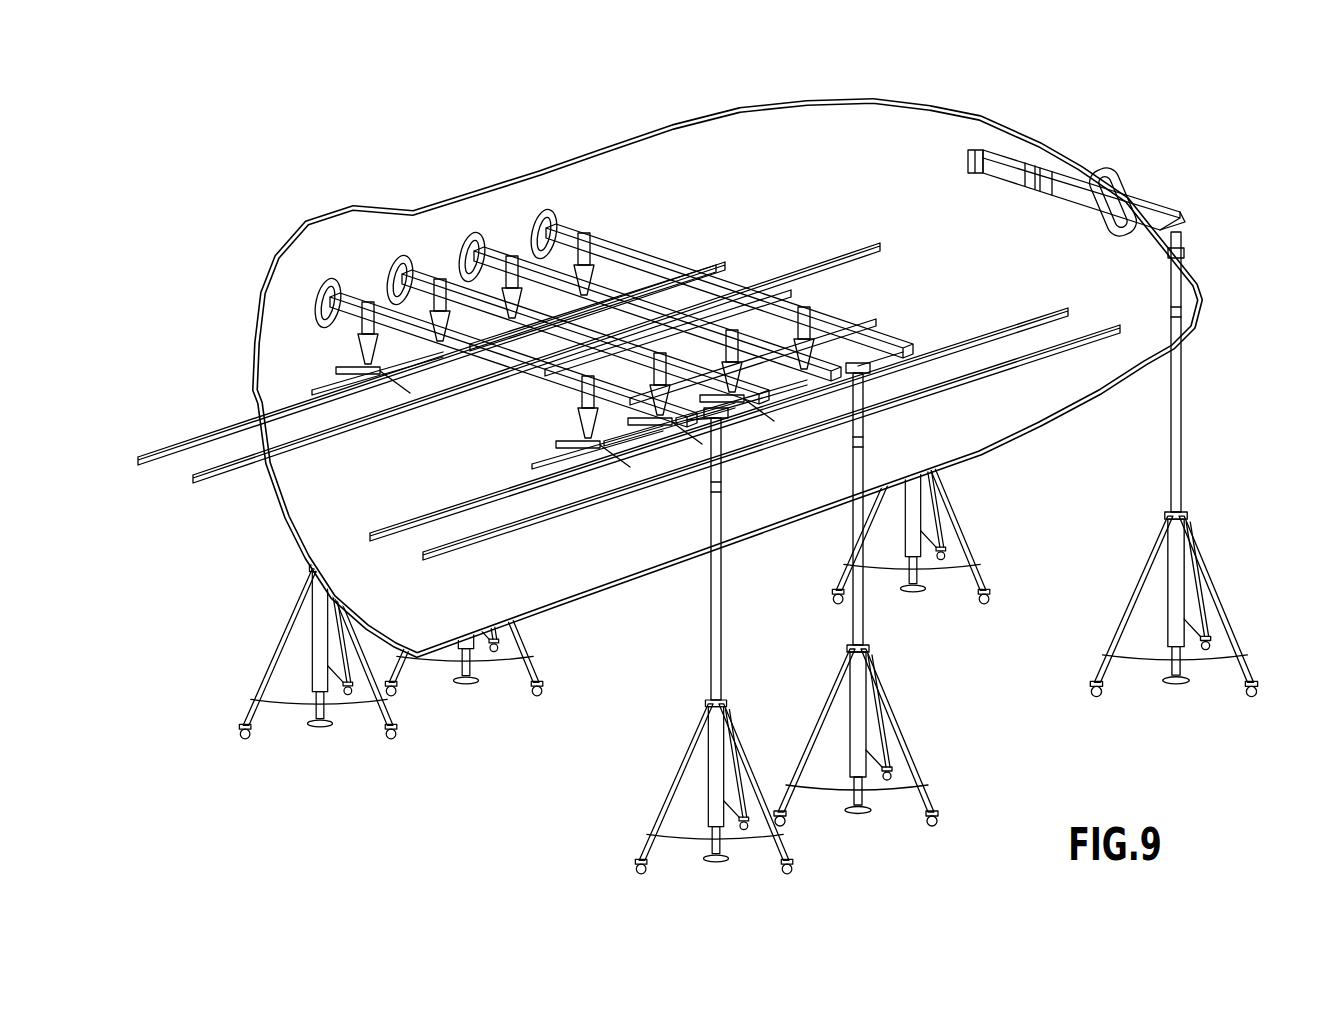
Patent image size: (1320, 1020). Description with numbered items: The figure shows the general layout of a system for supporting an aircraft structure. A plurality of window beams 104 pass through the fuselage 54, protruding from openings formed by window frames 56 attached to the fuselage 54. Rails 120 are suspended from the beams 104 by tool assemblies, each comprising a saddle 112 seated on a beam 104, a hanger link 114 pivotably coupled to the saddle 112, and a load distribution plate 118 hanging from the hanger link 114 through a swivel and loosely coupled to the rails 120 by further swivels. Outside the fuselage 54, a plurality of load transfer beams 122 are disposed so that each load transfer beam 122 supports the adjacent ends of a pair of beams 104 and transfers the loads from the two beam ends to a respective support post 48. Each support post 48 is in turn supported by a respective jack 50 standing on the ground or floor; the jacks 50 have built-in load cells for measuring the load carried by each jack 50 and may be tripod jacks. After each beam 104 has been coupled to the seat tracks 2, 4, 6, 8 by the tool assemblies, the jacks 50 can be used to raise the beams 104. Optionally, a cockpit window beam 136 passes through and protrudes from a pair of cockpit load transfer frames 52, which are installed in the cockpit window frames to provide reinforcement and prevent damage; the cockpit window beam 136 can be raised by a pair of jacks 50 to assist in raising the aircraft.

The seat track 2 is at (996, 366).
The seat track 4 is at (1008, 312).
The seat track 6 is at (240, 470).
The seat track 8 is at (222, 432).
The support post 48 is at (1183, 378).
The jack 50 is at (285, 649).
The cockpit load transfer frame 52 is at (1105, 172).
The fuselage 54 is at (772, 132).
The window frame 56 is at (556, 208).
The window beam 104 is at (484, 250).
The saddle 112 is at (586, 236).
The hanger link 114 is at (655, 278).
The load distribution plate 118 is at (415, 396).
The rail 120 is at (316, 386).
The load transfer beam 122 is at (720, 442).
The cockpit window beam 136 is at (1044, 162).